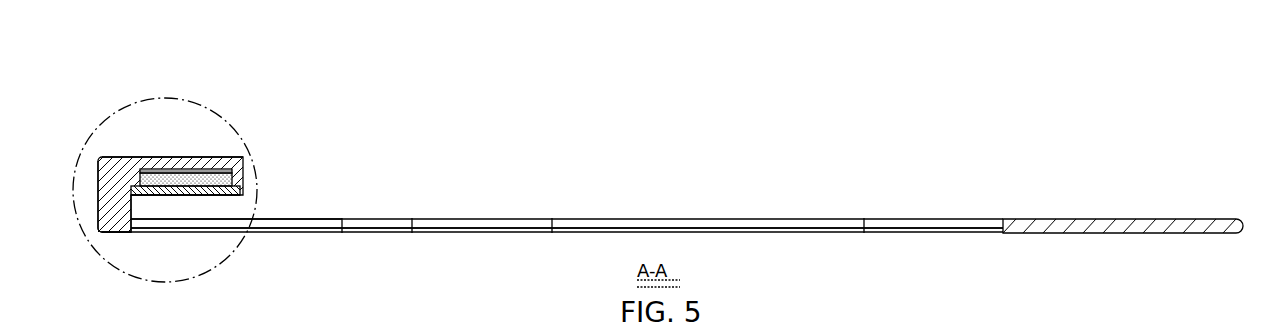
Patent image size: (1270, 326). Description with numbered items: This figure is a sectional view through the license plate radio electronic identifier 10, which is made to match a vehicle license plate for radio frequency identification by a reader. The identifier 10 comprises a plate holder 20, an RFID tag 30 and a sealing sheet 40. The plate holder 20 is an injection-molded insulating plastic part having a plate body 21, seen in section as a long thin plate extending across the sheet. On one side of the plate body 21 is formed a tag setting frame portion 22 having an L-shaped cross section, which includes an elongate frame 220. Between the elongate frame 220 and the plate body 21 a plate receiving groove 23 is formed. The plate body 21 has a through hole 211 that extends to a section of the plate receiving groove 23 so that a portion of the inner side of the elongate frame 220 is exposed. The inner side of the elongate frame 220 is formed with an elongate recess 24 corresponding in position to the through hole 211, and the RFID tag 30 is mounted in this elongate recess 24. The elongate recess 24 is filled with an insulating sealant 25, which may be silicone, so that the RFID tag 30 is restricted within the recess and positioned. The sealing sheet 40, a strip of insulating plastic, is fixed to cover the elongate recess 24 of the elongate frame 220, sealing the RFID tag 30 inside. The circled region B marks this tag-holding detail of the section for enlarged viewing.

The identifier 10 is at (765, 210).
The plate holder 20 is at (803, 233).
The plate body 21 is at (1023, 230).
The tag setting frame portion 22 is at (181, 140).
The plate receiving groove 23 is at (150, 207).
The elongate recess 24 is at (232, 180).
The insulating sealant 25 is at (208, 192).
The RFID tag 30 is at (192, 172).
The sealing sheet 40 is at (178, 188).
The through hole 211 is at (167, 225).
The elongate frame 220 is at (155, 168).
The detail circle B is at (242, 138).